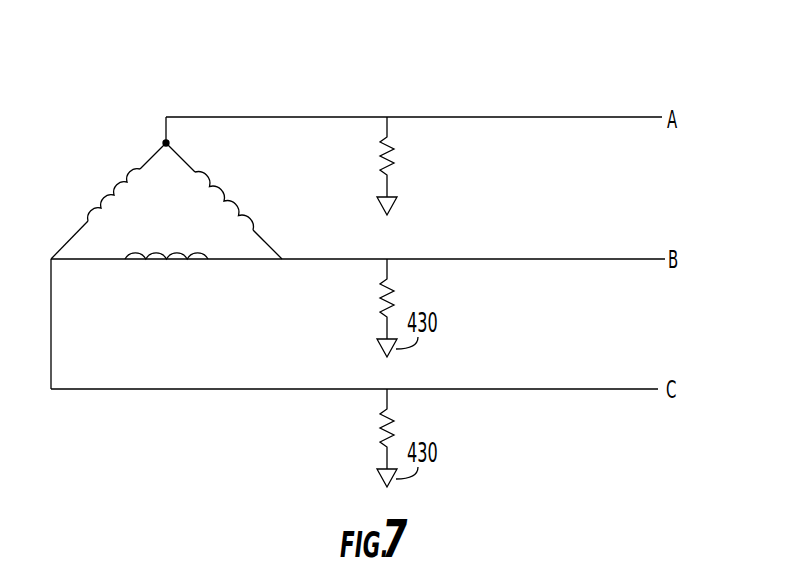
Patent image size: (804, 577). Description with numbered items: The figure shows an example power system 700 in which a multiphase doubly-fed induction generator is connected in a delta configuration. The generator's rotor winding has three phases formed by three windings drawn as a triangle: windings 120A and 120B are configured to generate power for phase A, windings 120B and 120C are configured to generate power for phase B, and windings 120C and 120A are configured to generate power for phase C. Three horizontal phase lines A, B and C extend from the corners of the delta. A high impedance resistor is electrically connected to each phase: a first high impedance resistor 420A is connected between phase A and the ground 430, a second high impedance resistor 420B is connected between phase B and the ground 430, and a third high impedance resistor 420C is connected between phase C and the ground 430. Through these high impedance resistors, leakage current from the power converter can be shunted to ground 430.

The power system 700 is at (478, 72).
The winding 120A is at (103, 197).
The winding 120B is at (231, 198).
The winding 120C is at (161, 251).
The first high impedance resistor 420A is at (392, 153).
The second high impedance resistor 420B is at (392, 295).
The third high impedance resistor 420C is at (392, 425).
The ground 430 is at (396, 207).